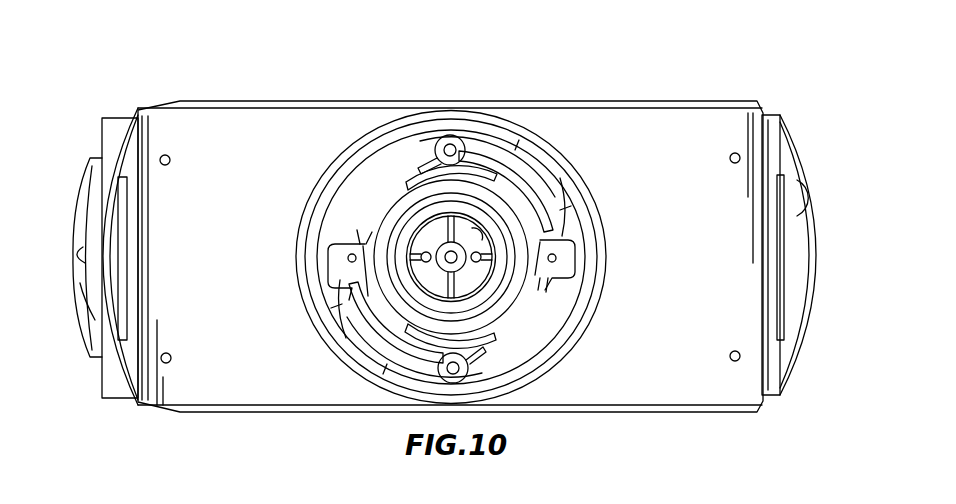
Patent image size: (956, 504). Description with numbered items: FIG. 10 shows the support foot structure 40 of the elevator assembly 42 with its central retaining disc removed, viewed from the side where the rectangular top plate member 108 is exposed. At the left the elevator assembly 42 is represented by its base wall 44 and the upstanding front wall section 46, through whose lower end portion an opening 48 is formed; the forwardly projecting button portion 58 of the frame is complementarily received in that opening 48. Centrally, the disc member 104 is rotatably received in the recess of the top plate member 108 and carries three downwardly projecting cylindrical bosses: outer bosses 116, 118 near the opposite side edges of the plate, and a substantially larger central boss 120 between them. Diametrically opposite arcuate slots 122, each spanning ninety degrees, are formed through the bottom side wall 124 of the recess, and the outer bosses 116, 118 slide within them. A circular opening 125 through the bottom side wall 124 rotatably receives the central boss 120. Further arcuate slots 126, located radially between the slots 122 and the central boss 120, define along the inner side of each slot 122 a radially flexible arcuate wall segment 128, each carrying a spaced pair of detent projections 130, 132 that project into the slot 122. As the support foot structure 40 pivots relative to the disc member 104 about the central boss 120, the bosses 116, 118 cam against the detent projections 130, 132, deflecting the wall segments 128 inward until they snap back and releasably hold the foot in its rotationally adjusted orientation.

The support foot structure 40 is at (628, 97).
The elevator assembly 42 is at (740, 82).
The base wall 44 is at (118, 133).
The front wall section 46 is at (78, 187).
The opening 48 is at (83, 247).
The button portion 58 is at (80, 283).
The disc member 104 is at (513, 163).
The top plate member 108 is at (740, 316).
The cylindrical boss 116 is at (445, 137).
The cylindrical boss 118 is at (468, 370).
The central boss 120 is at (467, 278).
The arcuate slot 122 is at (572, 168).
The bottom side wall 124 is at (378, 209).
The circular opening 125 is at (477, 236).
The arcuate slot 126 is at (418, 168).
The arcuate wall segment 128 is at (502, 163).
The detent projection 130 is at (478, 137).
The detent projection 132 is at (556, 248).